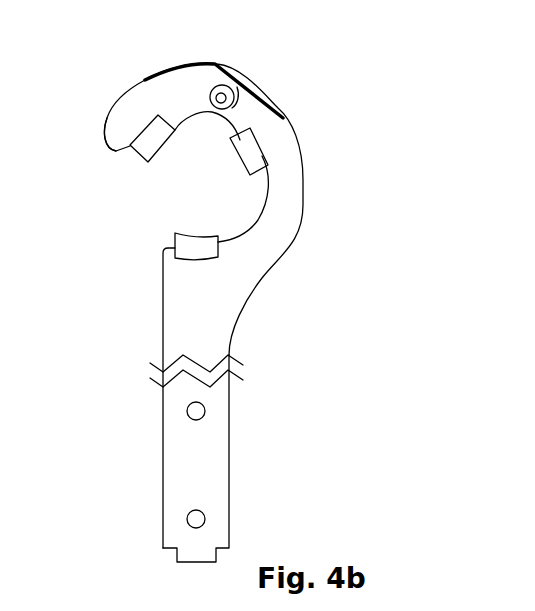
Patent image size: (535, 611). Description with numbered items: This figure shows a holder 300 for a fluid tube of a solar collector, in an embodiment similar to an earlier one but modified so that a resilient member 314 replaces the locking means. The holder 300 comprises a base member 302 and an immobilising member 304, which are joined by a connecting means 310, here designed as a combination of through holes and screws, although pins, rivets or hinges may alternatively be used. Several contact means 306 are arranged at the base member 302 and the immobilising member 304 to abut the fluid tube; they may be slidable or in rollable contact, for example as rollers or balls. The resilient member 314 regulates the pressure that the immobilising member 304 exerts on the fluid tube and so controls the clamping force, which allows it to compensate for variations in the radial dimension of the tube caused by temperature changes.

The holder 300 is at (365, 210).
The base member 302 is at (235, 285).
The immobilising member 304 is at (113, 133).
The contact means 306 is at (248, 156).
The connecting means 310 is at (221, 98).
The resilient member 314 is at (223, 67).